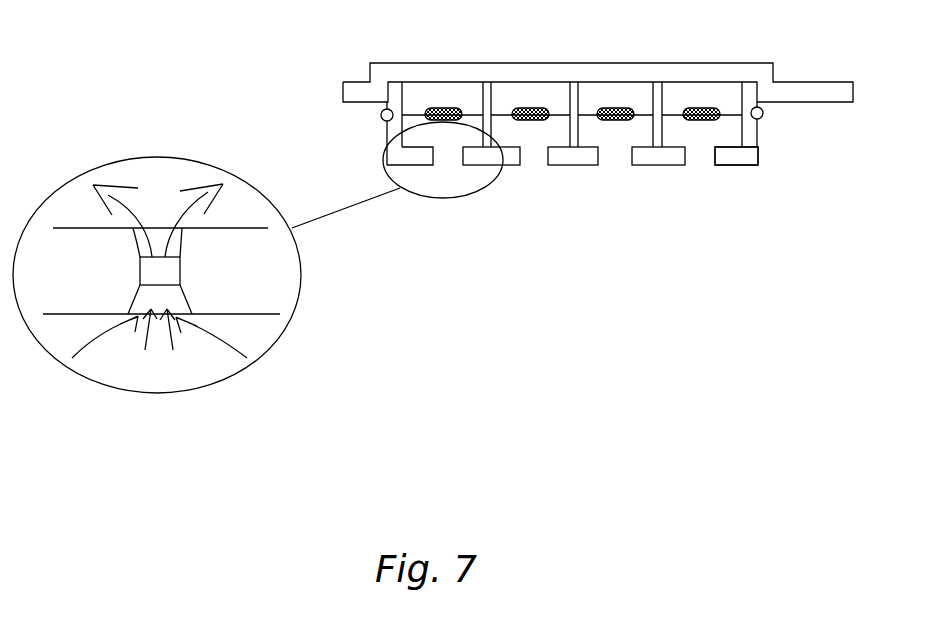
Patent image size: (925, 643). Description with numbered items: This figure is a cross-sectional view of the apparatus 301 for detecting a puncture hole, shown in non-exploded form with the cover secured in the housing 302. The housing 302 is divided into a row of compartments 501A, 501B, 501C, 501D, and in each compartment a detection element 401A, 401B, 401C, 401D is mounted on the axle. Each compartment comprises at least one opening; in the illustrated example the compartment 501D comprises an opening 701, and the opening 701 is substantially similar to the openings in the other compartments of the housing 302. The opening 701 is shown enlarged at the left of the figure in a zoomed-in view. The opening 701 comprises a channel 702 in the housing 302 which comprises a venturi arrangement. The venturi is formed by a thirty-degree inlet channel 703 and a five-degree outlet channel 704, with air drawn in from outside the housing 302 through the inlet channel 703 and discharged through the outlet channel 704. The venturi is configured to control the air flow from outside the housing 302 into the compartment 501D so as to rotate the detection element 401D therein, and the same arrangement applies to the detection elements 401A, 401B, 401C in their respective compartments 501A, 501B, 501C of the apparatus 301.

The apparatus 301 is at (765, 72).
The housing 302 is at (752, 156).
The detection element 401A is at (702, 120).
The detection element 401B is at (615, 120).
The detection element 401C is at (527, 120).
The detection element 401D is at (443, 120).
The compartment 501A is at (706, 93).
The compartment 501B is at (617, 93).
The compartment 501C is at (532, 93).
The compartment 501D is at (445, 93).
The opening 701 is at (437, 163).
The channel 702 is at (140, 271).
The inlet channel 703 is at (180, 302).
The outlet channel 704 is at (182, 246).